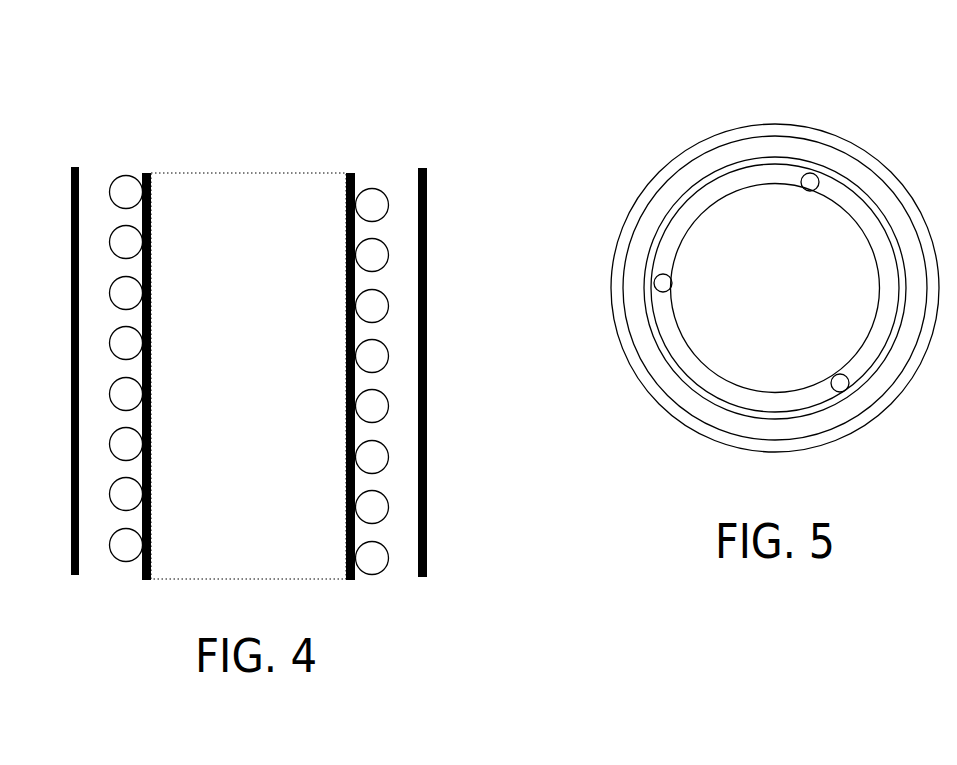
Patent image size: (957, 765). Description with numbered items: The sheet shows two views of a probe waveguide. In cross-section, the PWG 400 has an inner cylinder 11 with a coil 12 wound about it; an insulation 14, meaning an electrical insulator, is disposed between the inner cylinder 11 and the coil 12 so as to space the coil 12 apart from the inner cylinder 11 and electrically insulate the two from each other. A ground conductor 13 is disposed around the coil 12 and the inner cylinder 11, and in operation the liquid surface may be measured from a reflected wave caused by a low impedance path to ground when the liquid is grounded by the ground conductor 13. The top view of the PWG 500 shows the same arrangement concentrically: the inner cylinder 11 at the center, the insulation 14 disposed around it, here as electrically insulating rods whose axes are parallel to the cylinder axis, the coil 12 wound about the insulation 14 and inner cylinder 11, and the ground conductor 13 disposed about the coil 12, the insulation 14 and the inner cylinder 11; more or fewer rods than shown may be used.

In FIG. 4, the inner cylinder 11 is at (240, 398).
In FIG. 5, the inner cylinder 11 is at (786, 310).
In FIG. 4, the coil 12 is at (376, 207).
In FIG. 5, the coil 12 is at (645, 340).
In FIG. 4, the ground conductor 13 is at (432, 552).
In FIG. 5, the ground conductor 13 is at (704, 133).
In FIG. 4, the insulation 14 is at (138, 521).
In FIG. 5, the insulation 14 is at (650, 271).
In FIG. 4, the PWG 400 is at (101, 108).
In FIG. 5, the PWG 500 is at (875, 87).